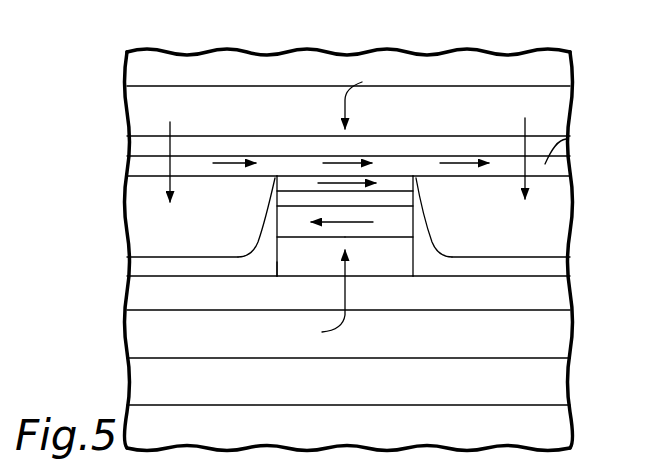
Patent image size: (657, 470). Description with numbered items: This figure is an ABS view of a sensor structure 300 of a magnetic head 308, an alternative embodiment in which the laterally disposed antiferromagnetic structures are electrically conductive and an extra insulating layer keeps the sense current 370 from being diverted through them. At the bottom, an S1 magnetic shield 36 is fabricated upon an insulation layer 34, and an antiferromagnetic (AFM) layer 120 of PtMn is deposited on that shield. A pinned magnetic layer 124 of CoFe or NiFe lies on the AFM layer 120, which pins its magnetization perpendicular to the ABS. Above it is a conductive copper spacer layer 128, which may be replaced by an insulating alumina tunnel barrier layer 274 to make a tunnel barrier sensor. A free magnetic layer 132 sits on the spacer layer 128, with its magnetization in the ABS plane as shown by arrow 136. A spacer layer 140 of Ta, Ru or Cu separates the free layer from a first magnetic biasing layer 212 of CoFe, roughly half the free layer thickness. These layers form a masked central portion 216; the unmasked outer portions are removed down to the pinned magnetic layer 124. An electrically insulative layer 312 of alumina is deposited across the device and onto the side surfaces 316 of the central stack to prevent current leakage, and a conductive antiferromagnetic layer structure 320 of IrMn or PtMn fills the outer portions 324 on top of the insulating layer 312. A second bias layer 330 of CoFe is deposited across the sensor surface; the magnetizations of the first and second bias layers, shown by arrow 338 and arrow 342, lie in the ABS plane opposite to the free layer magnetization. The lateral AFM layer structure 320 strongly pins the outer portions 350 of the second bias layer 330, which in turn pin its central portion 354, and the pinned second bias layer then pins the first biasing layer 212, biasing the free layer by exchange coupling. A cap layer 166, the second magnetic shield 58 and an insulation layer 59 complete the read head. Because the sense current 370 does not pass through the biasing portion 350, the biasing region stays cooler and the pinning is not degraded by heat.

The insulation layer 34 is at (552, 420).
The S1 magnetic shield 36 is at (552, 382).
The second magnetic shield 58 is at (558, 105).
The insulation layer 59 is at (558, 67).
The antiferromagnetic (AFM) layer 120 is at (552, 338).
The pinned magnetic layer 124 is at (552, 293).
The spacer layer 128 is at (409, 266).
The free magnetic layer 132 is at (397, 227).
The arrow 136 is at (338, 224).
The spacer layer 140 is at (267, 197).
The cap layer 166 is at (435, 142).
The first magnetic biasing layer 212 is at (418, 176).
The central portion 216 is at (363, 92).
The tunnel barrier layer 274 is at (276, 262).
The sensor structure 300 is at (181, 44).
The magnetic head 308 is at (288, 44).
The electrically insulative layer 312 is at (189, 239).
The side surfaces 316 is at (263, 228).
The antiferromagnetic layer structure 320 is at (558, 214).
The outer portions 324 is at (346, 147).
The second bias layer 330 is at (560, 166).
The arrow 338 is at (318, 181).
The arrow 342 is at (330, 162).
The outer portions of the second bias layer 350 is at (560, 141).
The central portion of the second bias layer 354 is at (382, 163).
The sense current 370 is at (312, 299).